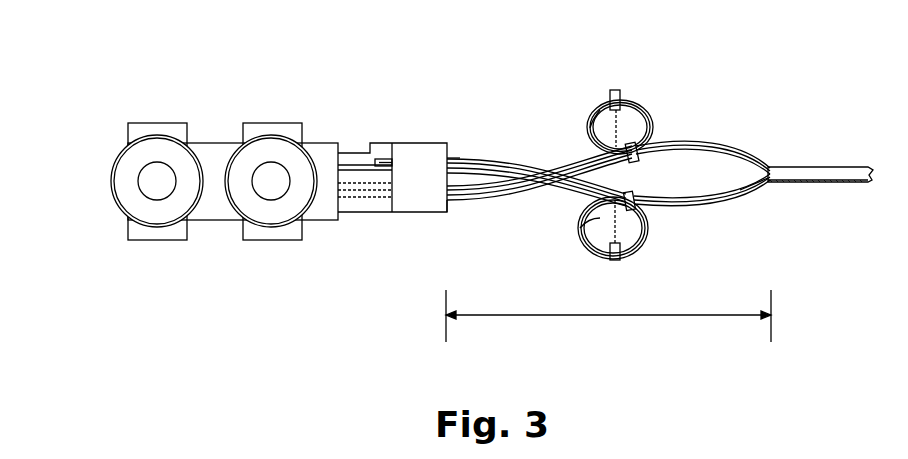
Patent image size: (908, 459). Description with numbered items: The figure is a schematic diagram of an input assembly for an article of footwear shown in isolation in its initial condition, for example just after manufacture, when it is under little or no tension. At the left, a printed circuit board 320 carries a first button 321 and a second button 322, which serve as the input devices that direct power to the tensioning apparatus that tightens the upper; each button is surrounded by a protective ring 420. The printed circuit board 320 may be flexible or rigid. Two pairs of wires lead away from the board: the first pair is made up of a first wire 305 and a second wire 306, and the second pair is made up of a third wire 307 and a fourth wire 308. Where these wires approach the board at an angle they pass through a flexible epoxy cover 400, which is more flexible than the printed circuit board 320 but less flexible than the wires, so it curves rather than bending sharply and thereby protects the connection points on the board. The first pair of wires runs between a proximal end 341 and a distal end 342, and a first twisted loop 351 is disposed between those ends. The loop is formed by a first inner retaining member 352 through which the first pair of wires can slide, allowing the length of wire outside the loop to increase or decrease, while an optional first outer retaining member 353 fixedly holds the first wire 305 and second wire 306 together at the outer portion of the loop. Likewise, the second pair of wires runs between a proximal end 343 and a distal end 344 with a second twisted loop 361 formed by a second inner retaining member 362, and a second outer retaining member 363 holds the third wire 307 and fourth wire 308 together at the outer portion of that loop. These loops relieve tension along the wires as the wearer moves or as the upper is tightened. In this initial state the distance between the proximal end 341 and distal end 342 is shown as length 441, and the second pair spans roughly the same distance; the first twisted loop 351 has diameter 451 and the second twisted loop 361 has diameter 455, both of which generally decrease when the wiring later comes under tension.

The first wire 305 is at (508, 157).
The second wire 306 is at (477, 158).
The third wire 307 is at (738, 196).
The fourth wire 308 is at (752, 194).
The printed circuit board 320 is at (213, 213).
The first button 321 is at (273, 172).
The second button 322 is at (158, 173).
The proximal end 341 is at (455, 157).
The distal end 342 is at (773, 165).
The proximal end 343 is at (447, 213).
The distal end 344 is at (770, 183).
The first twisted loop 351 is at (650, 107).
The first inner retaining member 352 is at (650, 140).
The first outer retaining member 353 is at (612, 90).
The second twisted loop 361 is at (582, 247).
The second inner retaining member 362 is at (647, 233).
The second outer retaining member 363 is at (620, 259).
The flexible epoxy cover 400 is at (413, 204).
The protective ring 420 is at (295, 238).
The length 441 is at (692, 317).
The diameter of first twisted loop 451 is at (603, 110).
The diameter of second twisted loop 455 is at (580, 227).